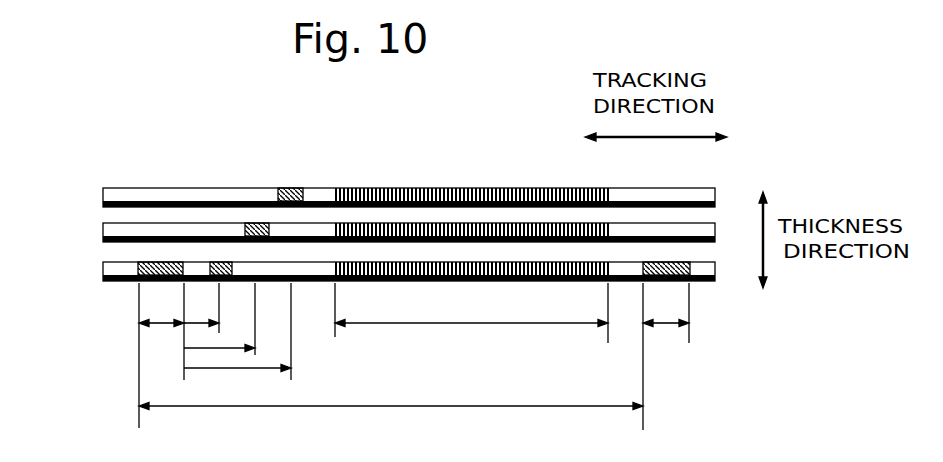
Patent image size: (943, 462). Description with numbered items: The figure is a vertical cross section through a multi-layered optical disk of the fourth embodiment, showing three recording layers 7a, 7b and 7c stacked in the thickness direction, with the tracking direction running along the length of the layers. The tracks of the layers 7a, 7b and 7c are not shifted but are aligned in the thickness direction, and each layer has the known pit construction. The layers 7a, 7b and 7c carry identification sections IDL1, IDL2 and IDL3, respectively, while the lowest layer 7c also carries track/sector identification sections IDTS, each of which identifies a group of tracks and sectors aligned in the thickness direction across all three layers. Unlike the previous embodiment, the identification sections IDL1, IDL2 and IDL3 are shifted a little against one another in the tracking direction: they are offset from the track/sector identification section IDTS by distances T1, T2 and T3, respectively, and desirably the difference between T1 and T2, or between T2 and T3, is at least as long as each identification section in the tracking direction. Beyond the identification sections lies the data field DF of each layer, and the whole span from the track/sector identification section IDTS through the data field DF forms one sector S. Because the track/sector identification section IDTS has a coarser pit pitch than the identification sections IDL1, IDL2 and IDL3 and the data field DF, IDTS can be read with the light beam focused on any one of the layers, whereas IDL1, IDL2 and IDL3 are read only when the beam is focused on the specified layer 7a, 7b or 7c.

The recording layer 7a is at (103, 197).
The recording layer 7b is at (103, 235).
The recording layer 7c is at (103, 273).
The identification section IDL1 is at (292, 189).
The identification section IDL2 is at (257, 224).
The identification section IDL3 is at (220, 262).
The track/sector identification section IDTS is at (423, 346).
The distance T1 is at (215, 312).
The distance T2 is at (235, 319).
The distance T3 is at (253, 331).
The data field DF is at (471, 329).
The sector S is at (391, 423).